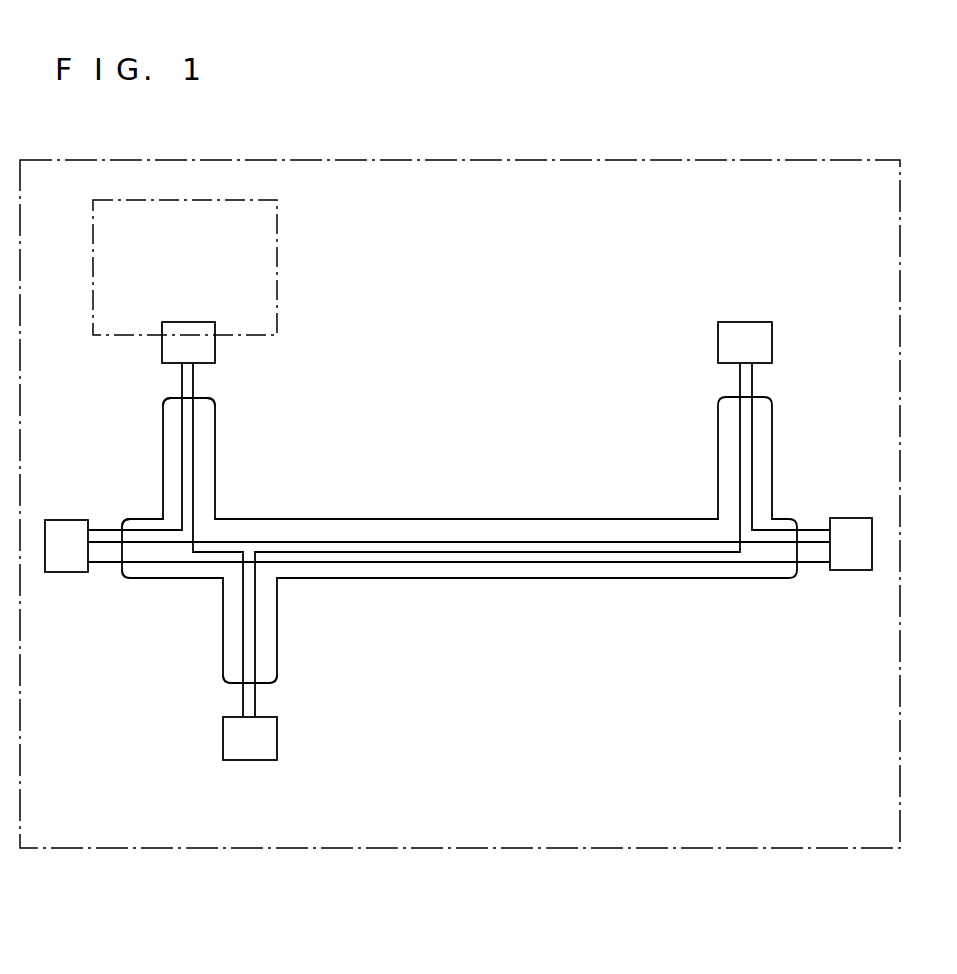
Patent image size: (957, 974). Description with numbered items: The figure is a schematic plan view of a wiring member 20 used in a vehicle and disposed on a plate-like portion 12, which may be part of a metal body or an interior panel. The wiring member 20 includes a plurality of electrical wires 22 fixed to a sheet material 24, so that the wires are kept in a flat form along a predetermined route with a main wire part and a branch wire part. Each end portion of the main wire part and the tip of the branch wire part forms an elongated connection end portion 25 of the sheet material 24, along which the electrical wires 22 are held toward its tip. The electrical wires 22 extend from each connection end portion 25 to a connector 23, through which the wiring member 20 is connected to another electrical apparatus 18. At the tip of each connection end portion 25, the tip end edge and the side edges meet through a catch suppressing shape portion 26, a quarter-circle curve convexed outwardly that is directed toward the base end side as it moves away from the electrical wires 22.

The plate-like portion 12 is at (780, 767).
The electrical apparatus 18 is at (277, 267).
The wiring member 20 is at (468, 482).
The electrical wire 22 is at (459, 540).
The connector 23 is at (217, 350).
The sheet material 24 is at (555, 523).
The connection end portion 25 is at (215, 427).
The catch suppressing shape portion 26 is at (215, 403).